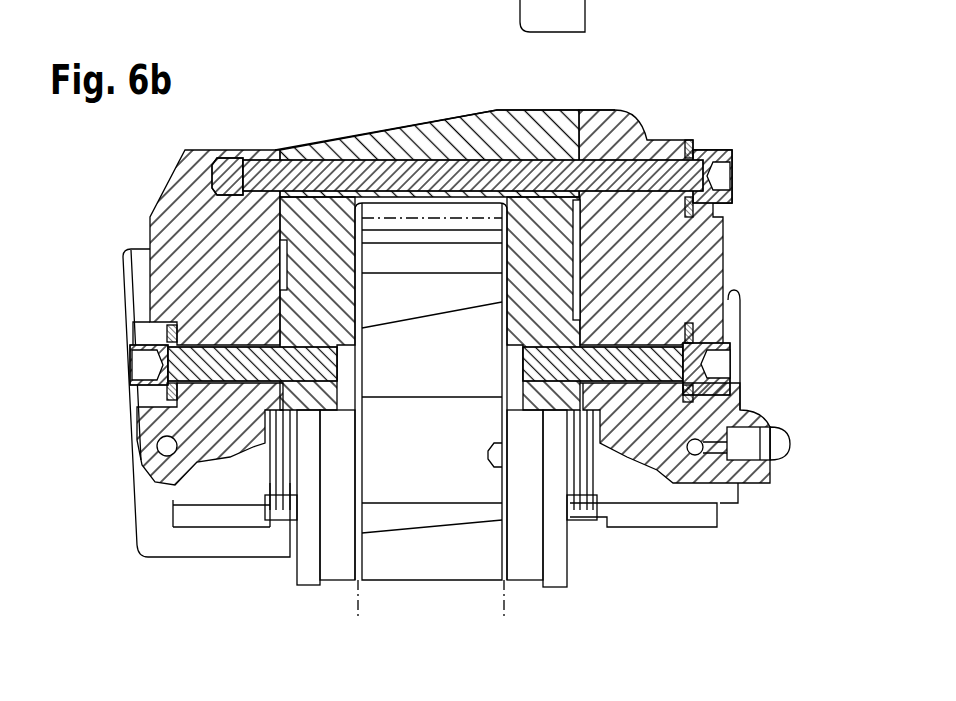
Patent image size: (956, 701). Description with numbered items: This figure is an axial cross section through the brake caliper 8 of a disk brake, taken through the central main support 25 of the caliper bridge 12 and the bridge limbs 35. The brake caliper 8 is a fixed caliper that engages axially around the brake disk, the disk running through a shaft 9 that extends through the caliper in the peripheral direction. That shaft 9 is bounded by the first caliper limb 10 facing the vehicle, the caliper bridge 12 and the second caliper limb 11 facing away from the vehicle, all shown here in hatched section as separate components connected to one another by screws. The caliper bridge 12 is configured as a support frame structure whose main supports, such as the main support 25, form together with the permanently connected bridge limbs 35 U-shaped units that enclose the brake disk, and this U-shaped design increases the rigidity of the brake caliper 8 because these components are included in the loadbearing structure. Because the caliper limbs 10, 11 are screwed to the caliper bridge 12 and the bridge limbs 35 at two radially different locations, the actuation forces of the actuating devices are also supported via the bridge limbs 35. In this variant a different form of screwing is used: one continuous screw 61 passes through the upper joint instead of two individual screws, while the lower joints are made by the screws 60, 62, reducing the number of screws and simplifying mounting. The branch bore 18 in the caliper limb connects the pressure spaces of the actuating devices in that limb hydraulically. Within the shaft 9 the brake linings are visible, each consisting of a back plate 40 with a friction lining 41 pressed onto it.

The brake caliper 8 is at (735, 103).
The shaft 9 is at (441, 560).
The first caliper limb 10 is at (693, 272).
The second caliper limb 11 is at (178, 284).
The caliper bridge 12 is at (450, 117).
The branch bore 18 is at (695, 455).
The main support 25 is at (403, 133).
The bridge limb 35 is at (545, 288).
The back plate 40 is at (312, 557).
The friction lining 41 is at (342, 542).
The screw 60 is at (697, 356).
The continuous screw 61 is at (630, 165).
The screw 62 is at (177, 377).